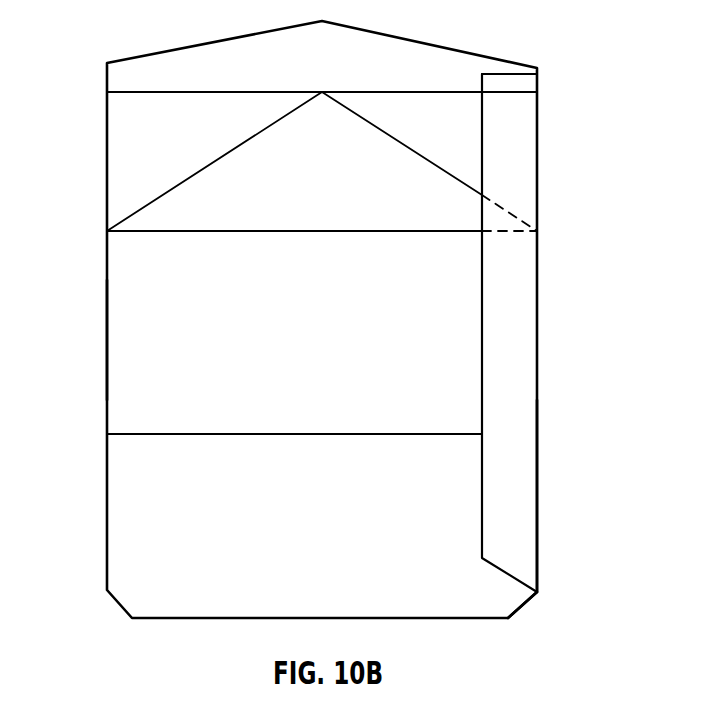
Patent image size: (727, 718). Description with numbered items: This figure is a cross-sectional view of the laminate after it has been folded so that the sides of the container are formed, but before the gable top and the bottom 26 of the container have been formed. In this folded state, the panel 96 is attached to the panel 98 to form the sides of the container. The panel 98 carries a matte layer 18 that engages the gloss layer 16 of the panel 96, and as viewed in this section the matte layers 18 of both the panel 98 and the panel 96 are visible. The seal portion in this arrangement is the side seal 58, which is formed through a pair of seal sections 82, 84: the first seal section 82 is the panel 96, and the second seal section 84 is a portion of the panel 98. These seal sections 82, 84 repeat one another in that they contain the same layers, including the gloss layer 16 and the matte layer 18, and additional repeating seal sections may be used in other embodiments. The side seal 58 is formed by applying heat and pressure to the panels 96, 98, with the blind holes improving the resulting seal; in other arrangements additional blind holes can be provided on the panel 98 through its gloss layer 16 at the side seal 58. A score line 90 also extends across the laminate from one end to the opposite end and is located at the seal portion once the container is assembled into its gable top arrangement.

The gloss layer 16 is at (132, 332).
The matte layer 18 is at (175, 498).
The bottom 26 is at (315, 338).
The side seal 58 is at (538, 468).
The first seal section 82 is at (538, 49).
The second seal section 84 is at (542, 628).
The score line 90 is at (208, 82).
The panel 96 is at (538, 395).
The panel 98 is at (138, 395).